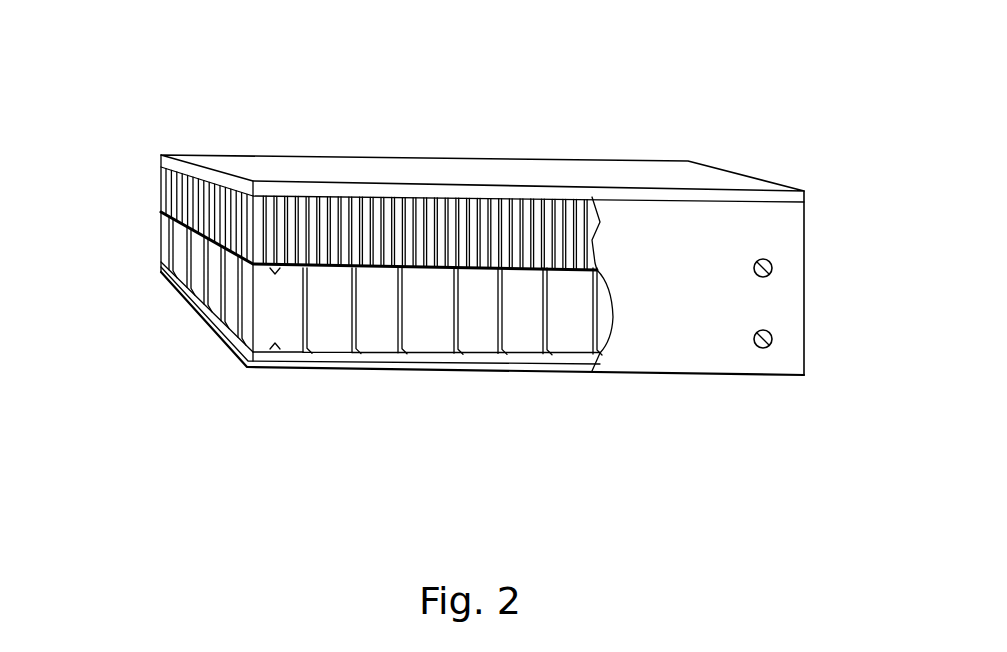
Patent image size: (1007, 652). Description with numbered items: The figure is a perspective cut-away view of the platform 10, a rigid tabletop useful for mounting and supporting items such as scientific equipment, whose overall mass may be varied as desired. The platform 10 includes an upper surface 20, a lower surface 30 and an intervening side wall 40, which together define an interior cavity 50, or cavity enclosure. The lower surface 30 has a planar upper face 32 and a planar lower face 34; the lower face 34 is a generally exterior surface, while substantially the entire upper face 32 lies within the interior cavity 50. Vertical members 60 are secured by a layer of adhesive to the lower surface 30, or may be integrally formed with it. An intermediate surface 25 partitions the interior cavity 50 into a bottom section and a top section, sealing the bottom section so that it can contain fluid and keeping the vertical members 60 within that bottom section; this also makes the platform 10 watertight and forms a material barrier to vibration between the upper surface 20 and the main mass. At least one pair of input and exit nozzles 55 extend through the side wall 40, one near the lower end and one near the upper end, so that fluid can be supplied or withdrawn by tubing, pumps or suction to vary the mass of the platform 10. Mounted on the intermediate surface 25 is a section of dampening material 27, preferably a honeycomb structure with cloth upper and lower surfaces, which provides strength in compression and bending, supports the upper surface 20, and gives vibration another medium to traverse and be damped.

The platform 10 is at (471, 271).
The upper surface 20 is at (620, 177).
The intermediate surface 25 is at (436, 270).
The dampening material 27 is at (350, 227).
The lower surface 30 is at (388, 371).
The upper face 32 is at (178, 358).
The lower face 34 is at (140, 184).
The side wall 40 is at (773, 303).
The interior cavity 50 is at (130, 270).
The nozzles 55 is at (775, 262).
The vertical members 60 is at (326, 318).